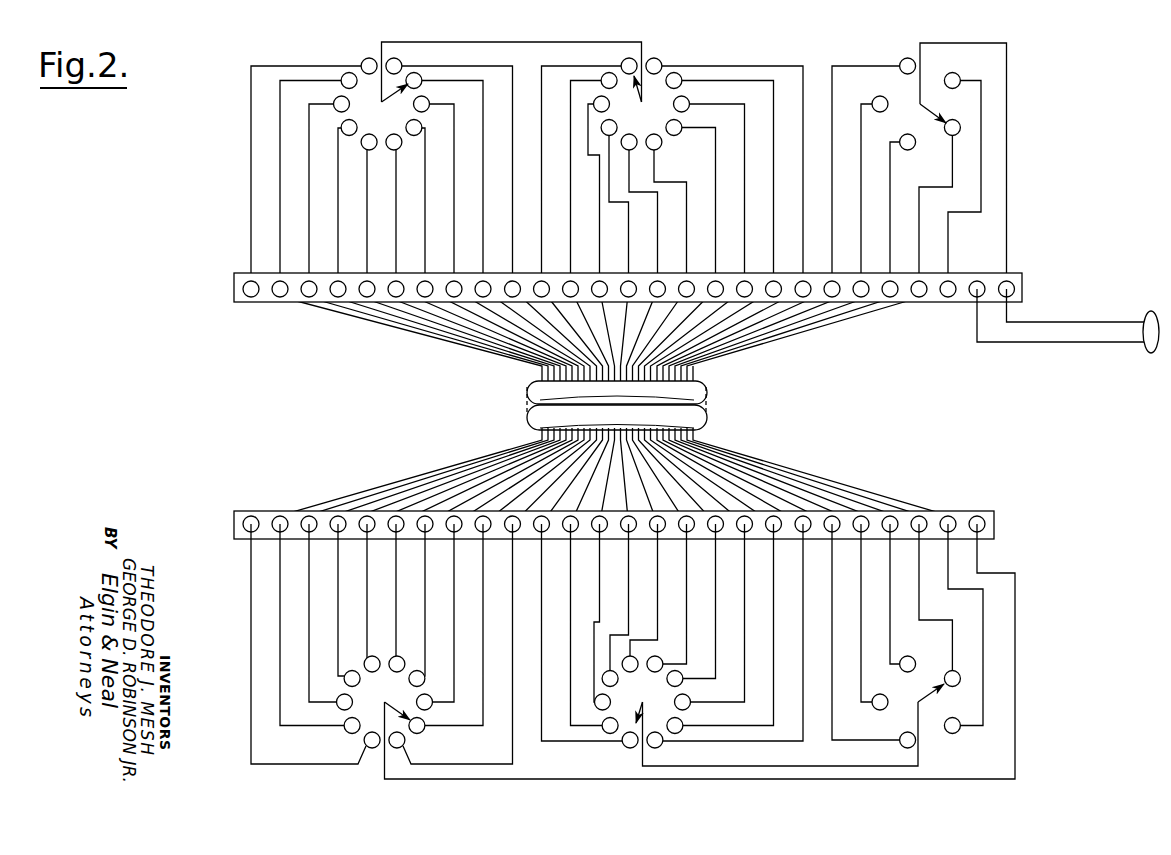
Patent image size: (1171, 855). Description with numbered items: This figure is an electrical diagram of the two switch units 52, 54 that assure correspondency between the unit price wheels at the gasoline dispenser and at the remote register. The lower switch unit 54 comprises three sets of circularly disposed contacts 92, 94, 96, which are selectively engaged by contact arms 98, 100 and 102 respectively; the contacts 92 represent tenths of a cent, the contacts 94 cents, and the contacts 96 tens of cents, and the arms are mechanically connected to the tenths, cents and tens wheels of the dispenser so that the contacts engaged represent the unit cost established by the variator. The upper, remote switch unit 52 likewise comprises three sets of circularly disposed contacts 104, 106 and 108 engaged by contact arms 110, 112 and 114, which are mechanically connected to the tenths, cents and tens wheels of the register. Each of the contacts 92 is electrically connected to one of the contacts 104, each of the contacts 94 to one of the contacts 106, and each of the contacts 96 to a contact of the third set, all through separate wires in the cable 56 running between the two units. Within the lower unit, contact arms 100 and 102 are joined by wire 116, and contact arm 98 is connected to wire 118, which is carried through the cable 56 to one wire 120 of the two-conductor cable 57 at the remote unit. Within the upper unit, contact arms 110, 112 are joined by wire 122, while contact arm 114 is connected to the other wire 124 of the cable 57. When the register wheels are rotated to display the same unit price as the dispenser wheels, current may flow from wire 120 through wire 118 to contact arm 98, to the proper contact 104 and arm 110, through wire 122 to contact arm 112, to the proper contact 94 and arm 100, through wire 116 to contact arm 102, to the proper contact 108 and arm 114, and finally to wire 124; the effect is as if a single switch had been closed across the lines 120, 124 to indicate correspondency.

The switch unit 52 is at (190, 197).
The switch unit 54 is at (211, 573).
The cable 56 is at (697, 387).
The cable 57 is at (1150, 353).
The contacts 92 is at (348, 738).
The contacts 94 is at (617, 746).
The contacts 96 is at (926, 739).
The contact arm 98 is at (398, 708).
The contact arm 100 is at (640, 705).
The contact arm 102 is at (929, 694).
The contacts 104 is at (340, 59).
The contacts 106 is at (674, 60).
The contacts 108 is at (898, 62).
The contact arm 110 is at (388, 103).
The contact arm 112 is at (642, 101).
The contact arm 114 is at (928, 113).
The wire 116 is at (760, 765).
The wire 118 is at (384, 769).
The wire 120 is at (975, 323).
The wire 122 is at (510, 42).
The wire 124 is at (1067, 323).